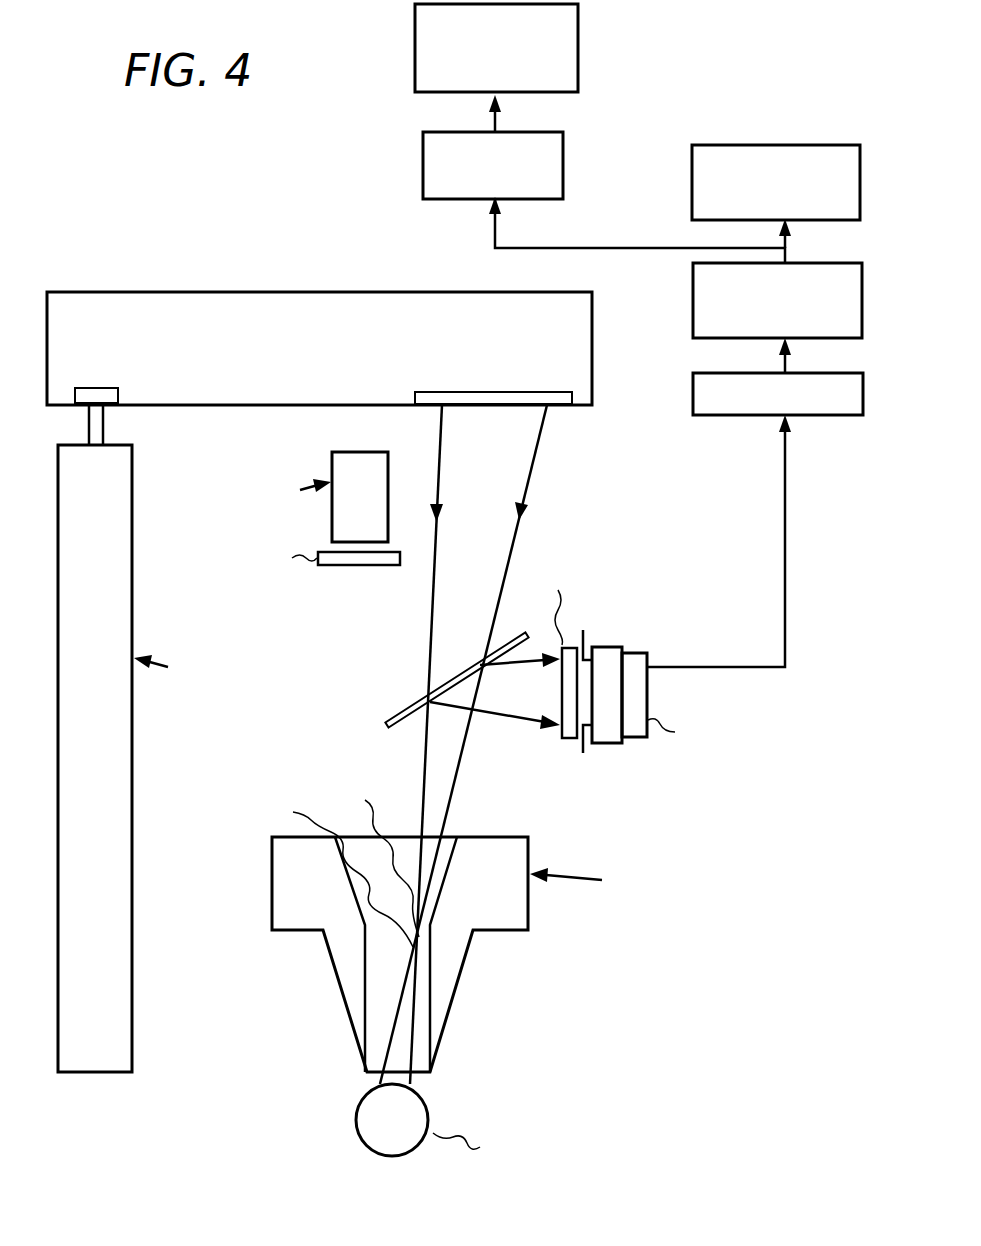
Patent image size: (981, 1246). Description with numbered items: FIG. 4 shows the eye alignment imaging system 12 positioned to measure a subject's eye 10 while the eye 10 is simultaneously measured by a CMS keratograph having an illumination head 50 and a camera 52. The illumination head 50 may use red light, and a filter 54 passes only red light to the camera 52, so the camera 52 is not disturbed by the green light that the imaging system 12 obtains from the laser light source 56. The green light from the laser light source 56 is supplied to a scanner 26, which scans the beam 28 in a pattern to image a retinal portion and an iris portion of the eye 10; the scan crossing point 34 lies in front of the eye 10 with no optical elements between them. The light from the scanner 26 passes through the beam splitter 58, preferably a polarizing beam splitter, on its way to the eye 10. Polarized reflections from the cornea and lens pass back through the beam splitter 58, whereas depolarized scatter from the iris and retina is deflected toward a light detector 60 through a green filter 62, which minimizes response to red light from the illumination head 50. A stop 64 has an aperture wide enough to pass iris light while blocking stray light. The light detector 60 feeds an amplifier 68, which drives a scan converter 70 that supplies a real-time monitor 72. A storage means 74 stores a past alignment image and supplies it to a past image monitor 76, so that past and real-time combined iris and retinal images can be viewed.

The eye 10 is at (432, 1102).
The eye alignment imaging system 12 is at (216, 259).
The scanner 26 is at (419, 364).
The beam 28 is at (337, 871).
The scan crossing point 34 is at (373, 862).
The illumination head 50 is at (503, 932).
The camera 52 is at (332, 465).
The filter 54 is at (350, 566).
The laser light source 56 is at (108, 628).
The beam splitter 58 is at (388, 716).
The light detector 60 is at (640, 745).
The filter 62 is at (562, 738).
The stop 64 is at (586, 639).
The amplifier 68 is at (754, 415).
The scan converter 70 is at (688, 323).
The real-time monitor 72 is at (690, 207).
The storage means 74 is at (452, 199).
The past image monitor 76 is at (413, 92).